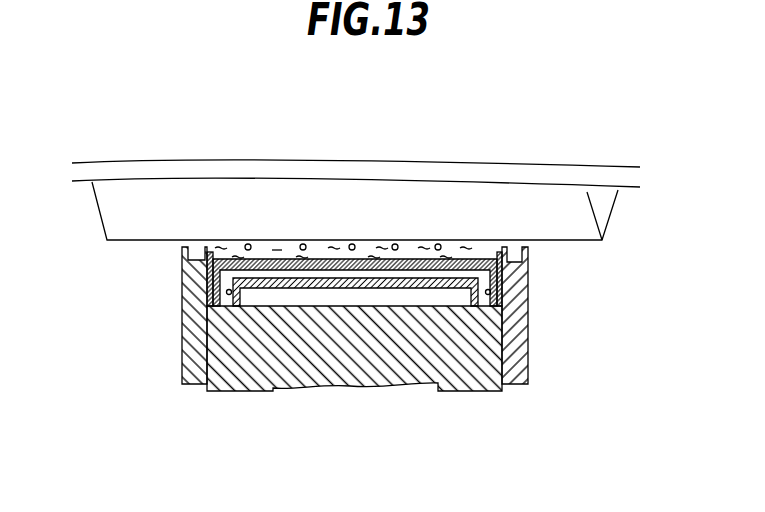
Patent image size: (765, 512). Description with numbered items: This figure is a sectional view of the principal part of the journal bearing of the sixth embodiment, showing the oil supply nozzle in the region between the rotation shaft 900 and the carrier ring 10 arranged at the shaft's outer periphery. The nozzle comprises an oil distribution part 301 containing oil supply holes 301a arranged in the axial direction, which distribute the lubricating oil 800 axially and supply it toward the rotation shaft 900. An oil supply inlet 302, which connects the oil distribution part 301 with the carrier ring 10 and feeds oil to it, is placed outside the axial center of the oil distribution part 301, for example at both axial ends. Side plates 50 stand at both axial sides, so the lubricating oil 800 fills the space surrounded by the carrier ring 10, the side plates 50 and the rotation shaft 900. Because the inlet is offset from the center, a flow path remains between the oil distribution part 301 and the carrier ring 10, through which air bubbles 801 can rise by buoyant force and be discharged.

The carrier ring 10 is at (476, 391).
The side plate 50 is at (185, 331).
The oil distribution part 301 is at (404, 275).
The oil supply hole 301a is at (314, 276).
The oil supply inlet 302 is at (102, 267).
The lubricating oil 800 is at (277, 250).
The air bubbles 801 is at (248, 244).
The rotation shaft 900 is at (567, 213).